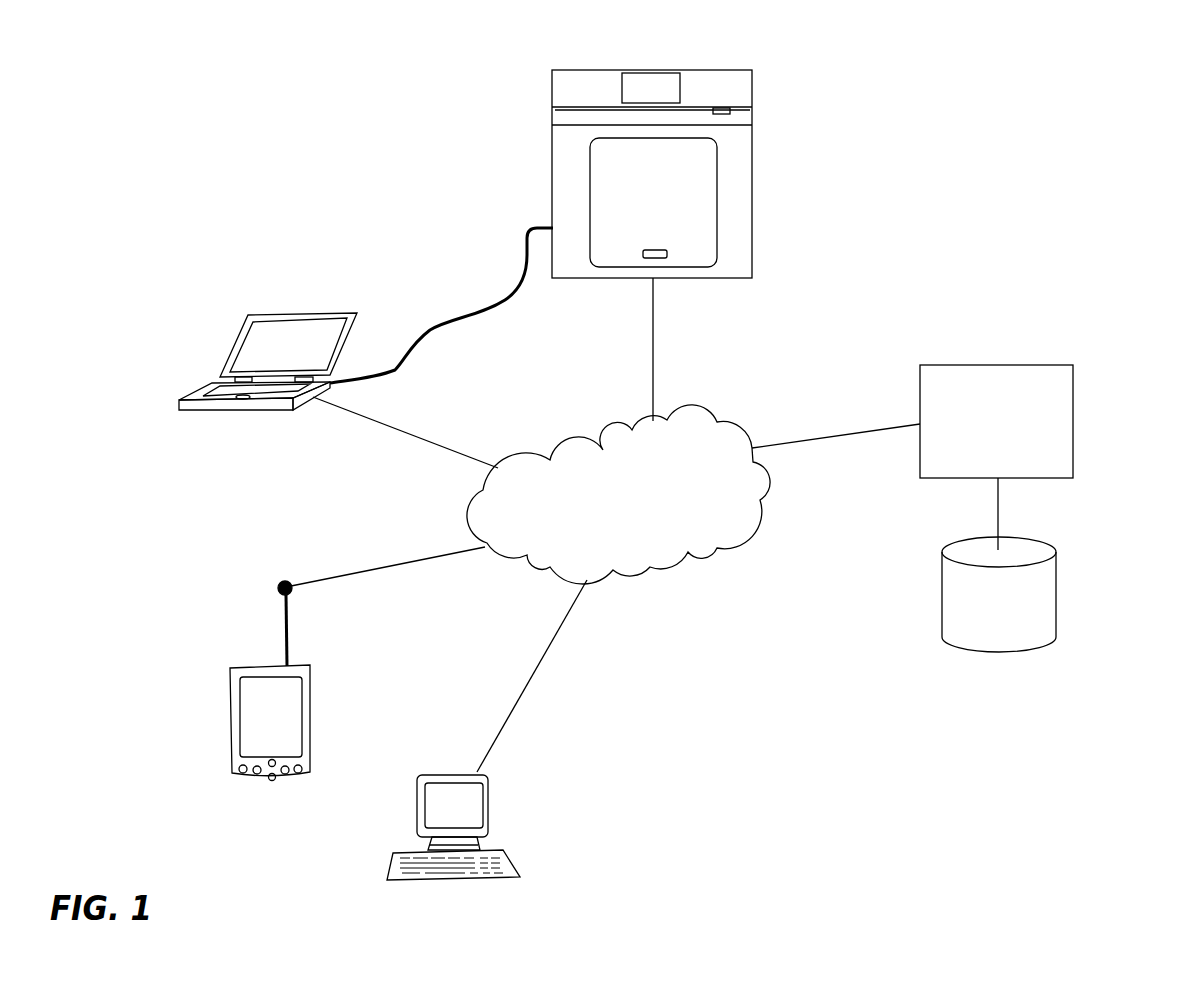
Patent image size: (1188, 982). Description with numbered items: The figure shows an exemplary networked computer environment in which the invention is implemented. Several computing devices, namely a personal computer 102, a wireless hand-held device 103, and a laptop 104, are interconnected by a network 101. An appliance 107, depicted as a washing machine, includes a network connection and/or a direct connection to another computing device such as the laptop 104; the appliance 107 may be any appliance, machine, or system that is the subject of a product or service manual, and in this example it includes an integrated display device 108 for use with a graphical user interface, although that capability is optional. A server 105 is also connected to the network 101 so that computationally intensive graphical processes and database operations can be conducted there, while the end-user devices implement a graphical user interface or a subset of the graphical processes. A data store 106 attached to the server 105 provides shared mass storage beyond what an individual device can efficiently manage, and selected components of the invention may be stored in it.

The network 101 is at (715, 422).
The personal computer 102 is at (492, 793).
The wireless hand-held device 103 is at (237, 724).
The laptop 104 is at (235, 335).
The server 105 is at (1060, 393).
The data store 106 is at (1058, 590).
The appliance (washing machine) 107 is at (553, 148).
The appliance display 108 is at (650, 80).